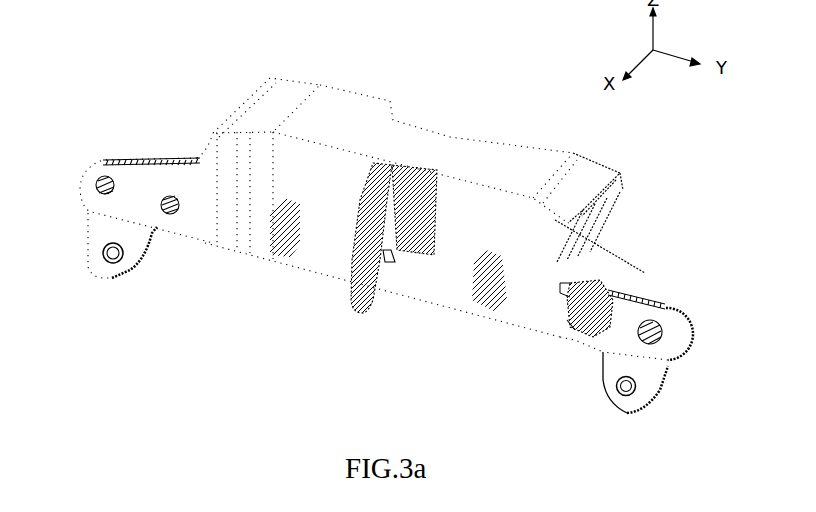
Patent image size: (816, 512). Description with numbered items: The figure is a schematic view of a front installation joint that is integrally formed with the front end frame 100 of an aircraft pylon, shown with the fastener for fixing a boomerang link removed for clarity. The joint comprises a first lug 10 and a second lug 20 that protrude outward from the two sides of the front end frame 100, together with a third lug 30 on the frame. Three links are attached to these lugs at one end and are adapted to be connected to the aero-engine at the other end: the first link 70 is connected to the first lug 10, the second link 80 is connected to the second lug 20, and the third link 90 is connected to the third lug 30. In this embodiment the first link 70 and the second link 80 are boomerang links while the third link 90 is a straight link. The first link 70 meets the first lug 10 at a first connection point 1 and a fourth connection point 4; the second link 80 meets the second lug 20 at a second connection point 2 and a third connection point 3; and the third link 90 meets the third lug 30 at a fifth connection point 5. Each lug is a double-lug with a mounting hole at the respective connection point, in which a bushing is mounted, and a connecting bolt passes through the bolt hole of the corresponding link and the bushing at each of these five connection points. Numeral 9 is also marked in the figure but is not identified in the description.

The first connection point 1 is at (97, 183).
The second connection point 2 is at (623, 317).
The third connection point 3 is at (665, 329).
The fourth connection point 4 is at (167, 190).
The fifth connection point 5 is at (389, 256).
The locking element 9 is at (572, 330).
The first lug 10 is at (138, 187).
The second lug 20 is at (625, 318).
The third lug 30 is at (398, 232).
The first link 70 is at (117, 272).
The second link 80 is at (610, 408).
The third link 90 is at (385, 265).
The front end frame 100 is at (513, 165).